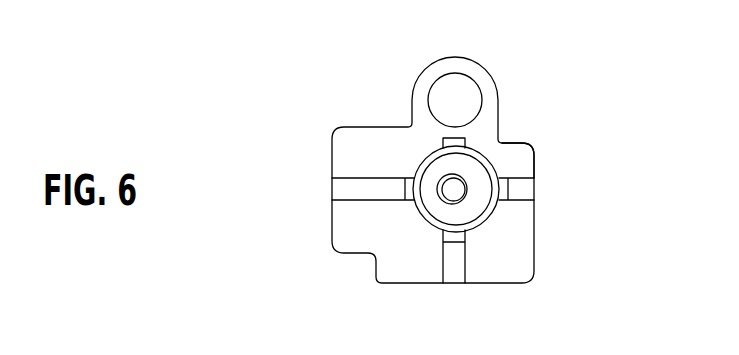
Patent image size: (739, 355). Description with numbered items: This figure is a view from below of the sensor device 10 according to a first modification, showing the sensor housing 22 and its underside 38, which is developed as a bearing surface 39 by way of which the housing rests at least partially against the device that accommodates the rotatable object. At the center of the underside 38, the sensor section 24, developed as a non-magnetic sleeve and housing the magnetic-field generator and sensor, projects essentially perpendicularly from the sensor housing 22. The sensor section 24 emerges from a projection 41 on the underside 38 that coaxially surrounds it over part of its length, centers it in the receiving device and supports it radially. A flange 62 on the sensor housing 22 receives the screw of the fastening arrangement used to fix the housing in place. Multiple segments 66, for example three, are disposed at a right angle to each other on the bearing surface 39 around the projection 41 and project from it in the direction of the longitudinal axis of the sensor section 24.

The sensor device 10 is at (589, 101).
The sensor housing 22 is at (390, 143).
The sensor section 24 is at (465, 202).
The underside 38 is at (568, 160).
The bearing surface 39 is at (517, 163).
The projection 41 is at (478, 170).
The flange 62 is at (450, 66).
The segments 66 is at (517, 189).